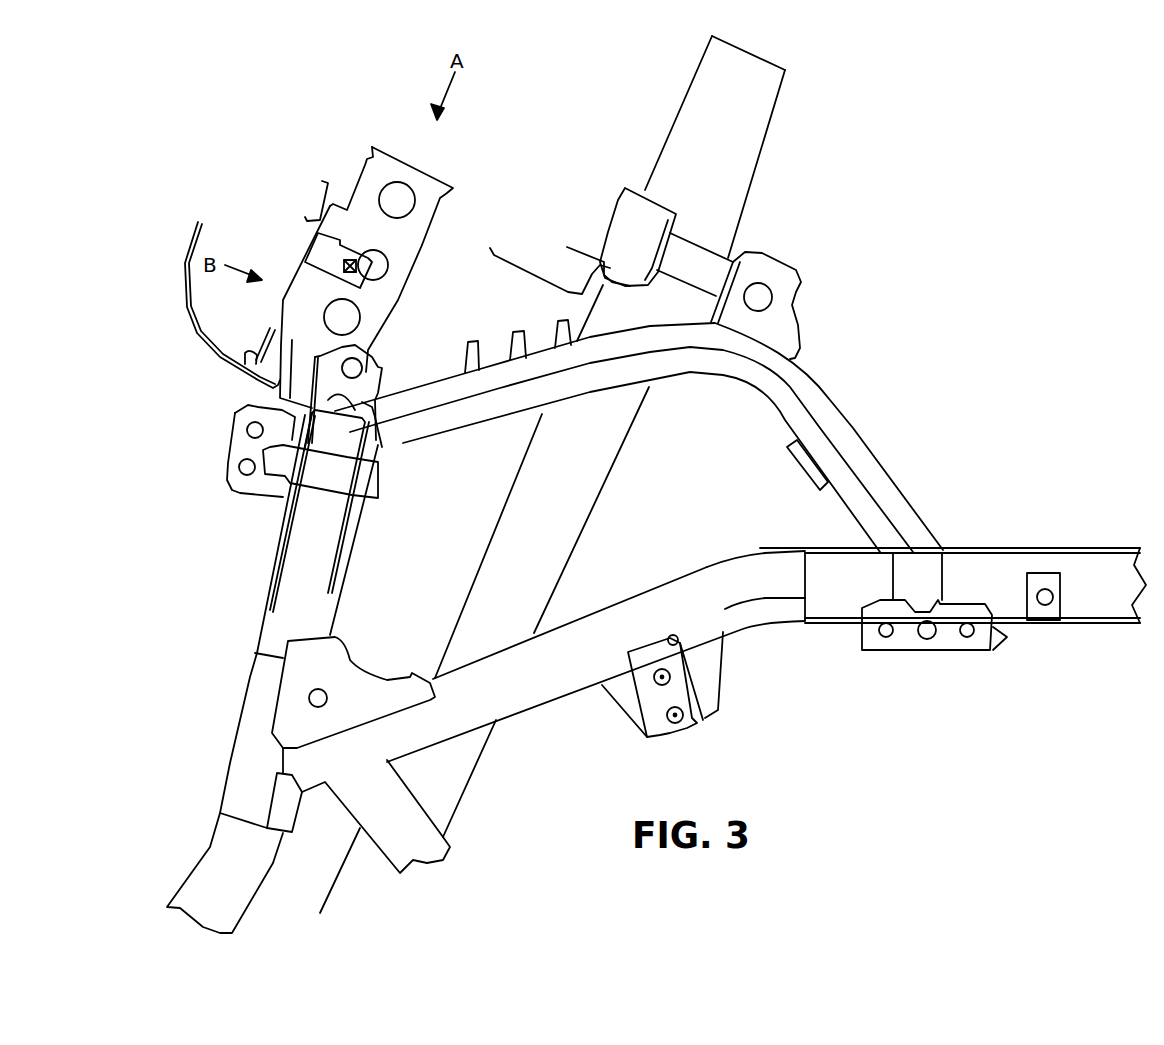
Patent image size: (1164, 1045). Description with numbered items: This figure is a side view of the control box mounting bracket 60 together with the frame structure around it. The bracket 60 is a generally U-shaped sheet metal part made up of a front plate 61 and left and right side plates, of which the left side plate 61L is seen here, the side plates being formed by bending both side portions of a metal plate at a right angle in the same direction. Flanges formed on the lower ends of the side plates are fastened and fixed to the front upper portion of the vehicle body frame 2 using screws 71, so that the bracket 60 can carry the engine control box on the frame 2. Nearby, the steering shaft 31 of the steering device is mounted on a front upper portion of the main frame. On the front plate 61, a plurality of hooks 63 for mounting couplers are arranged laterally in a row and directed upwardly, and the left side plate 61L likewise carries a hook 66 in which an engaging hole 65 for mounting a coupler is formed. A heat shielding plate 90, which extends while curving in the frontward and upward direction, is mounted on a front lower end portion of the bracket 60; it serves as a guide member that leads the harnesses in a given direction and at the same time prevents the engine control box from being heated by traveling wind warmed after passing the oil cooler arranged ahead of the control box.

The vehicle body frame 2 is at (946, 535).
The steering shaft 31 is at (593, 470).
The control box mounting bracket 60 is at (450, 189).
The front plate 61 is at (295, 263).
The left side plate 61L is at (374, 319).
The hooks 63 is at (322, 182).
The engaging hole 65 is at (380, 258).
The hook 66 is at (360, 287).
The screws 71 is at (385, 447).
The heat shielding plate 90 is at (192, 338).